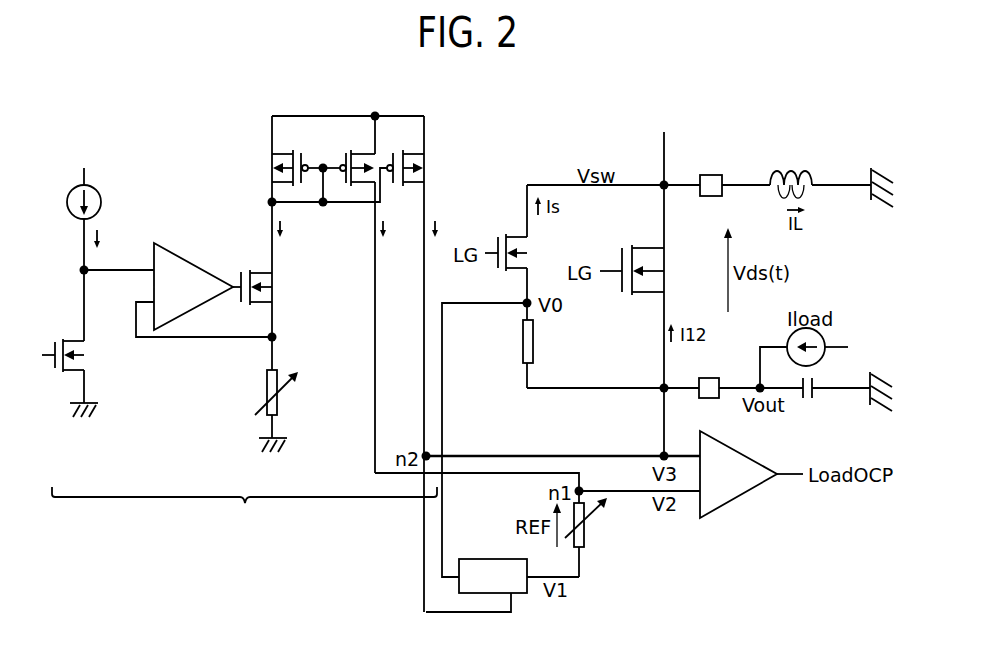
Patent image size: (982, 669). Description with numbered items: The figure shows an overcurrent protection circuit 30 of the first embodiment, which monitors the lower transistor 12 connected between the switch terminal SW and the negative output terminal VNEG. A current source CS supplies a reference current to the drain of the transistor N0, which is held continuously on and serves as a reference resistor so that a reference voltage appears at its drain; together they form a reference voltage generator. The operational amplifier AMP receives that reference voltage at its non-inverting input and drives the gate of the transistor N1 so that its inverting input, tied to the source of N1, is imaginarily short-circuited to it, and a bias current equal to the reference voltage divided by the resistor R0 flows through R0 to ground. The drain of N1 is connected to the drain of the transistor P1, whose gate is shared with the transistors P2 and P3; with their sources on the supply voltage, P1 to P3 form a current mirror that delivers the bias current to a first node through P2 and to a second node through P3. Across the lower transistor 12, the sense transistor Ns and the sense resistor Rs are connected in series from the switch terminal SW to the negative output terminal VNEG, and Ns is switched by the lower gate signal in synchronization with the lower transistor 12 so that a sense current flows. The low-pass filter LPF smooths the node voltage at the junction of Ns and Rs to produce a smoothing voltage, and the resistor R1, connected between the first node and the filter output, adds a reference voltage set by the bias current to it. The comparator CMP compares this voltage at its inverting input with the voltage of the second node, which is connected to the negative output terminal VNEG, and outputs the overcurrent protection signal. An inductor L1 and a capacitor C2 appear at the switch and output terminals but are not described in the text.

The overcurrent protection circuit 30 is at (157, 110).
The lower transistor 12 is at (654, 270).
The current source CS is at (105, 219).
The transistor N0 is at (97, 363).
The transistor N1 is at (280, 287).
The operational amplifier AMP is at (196, 265).
The resistor R0 is at (291, 392).
The transistor P1 is at (277, 168).
The transistor P2 is at (380, 152).
The transistor P3 is at (423, 176).
The sense transistor Ns is at (530, 243).
The sense resistor Rs is at (548, 345).
The switch terminal SW is at (709, 175).
The inductor L1 is at (792, 170).
The negative output terminal VNEG is at (710, 378).
The output capacitor C2 is at (807, 400).
The comparator CMP is at (740, 497).
The resistor R1 is at (598, 534).
The low-pass filter LPF is at (493, 576).